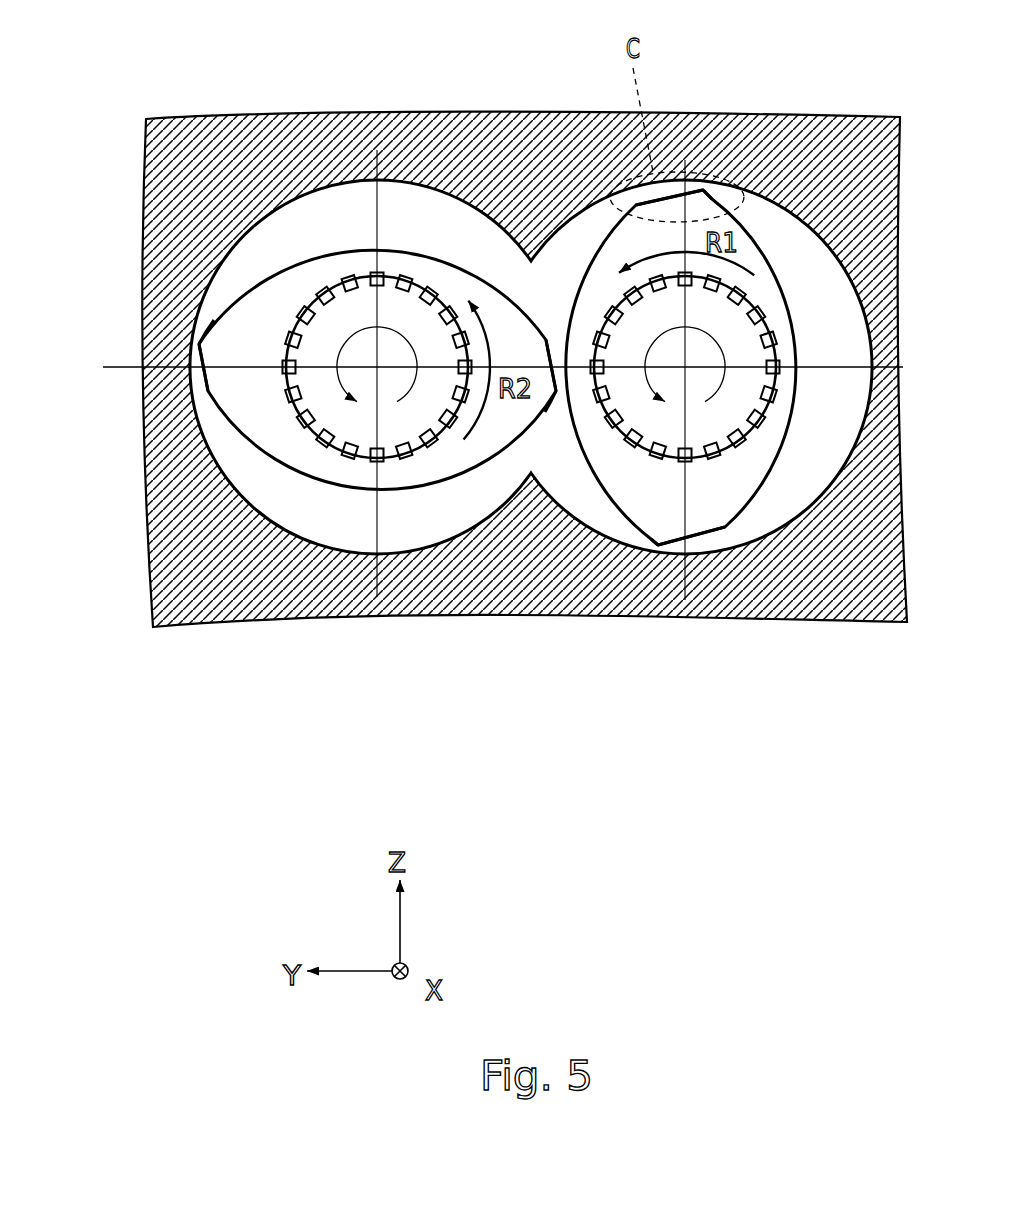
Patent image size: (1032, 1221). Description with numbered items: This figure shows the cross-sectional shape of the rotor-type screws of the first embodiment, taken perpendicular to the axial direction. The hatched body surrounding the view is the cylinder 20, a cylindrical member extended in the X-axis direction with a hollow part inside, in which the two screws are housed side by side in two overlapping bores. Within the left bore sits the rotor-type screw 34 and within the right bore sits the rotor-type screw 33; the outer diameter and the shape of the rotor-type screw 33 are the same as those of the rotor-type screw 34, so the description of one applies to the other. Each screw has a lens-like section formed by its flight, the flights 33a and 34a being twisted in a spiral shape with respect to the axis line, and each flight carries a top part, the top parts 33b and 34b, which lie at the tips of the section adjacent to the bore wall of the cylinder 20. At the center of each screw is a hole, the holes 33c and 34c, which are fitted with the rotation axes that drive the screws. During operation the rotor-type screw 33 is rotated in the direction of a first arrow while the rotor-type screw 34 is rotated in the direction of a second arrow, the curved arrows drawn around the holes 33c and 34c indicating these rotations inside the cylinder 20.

The cylinder 20 is at (455, 112).
The rotor-type screw 33 is at (757, 505).
The flight 33a is at (713, 196).
The top part 33b is at (693, 190).
The hole 33c is at (730, 283).
The rotor-type screw 34 is at (278, 495).
The flight 34a is at (197, 340).
The top part 34b is at (549, 345).
The hole 34c is at (418, 282).